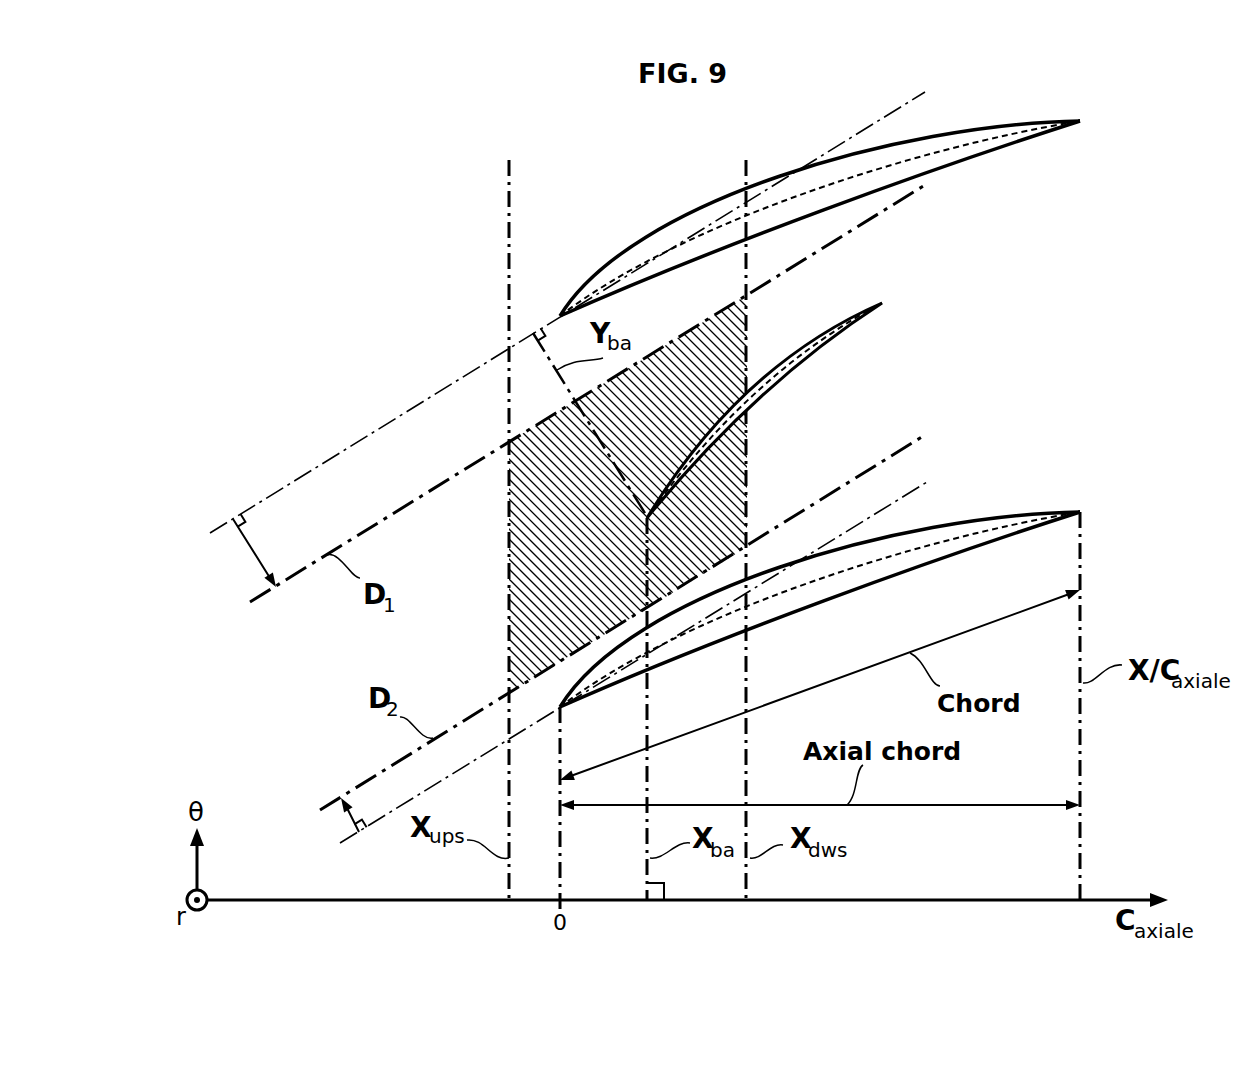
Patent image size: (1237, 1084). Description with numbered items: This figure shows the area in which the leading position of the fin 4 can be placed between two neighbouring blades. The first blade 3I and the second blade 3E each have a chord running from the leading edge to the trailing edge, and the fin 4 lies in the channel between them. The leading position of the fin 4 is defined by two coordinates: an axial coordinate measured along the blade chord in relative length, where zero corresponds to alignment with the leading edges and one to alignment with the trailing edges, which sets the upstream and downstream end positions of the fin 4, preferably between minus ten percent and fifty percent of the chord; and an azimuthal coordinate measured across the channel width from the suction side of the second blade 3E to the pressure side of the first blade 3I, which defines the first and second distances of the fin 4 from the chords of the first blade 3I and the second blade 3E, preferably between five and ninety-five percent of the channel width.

The first blade 3I is at (964, 172).
The second blade 3E is at (958, 520).
The fin 4 is at (839, 360).